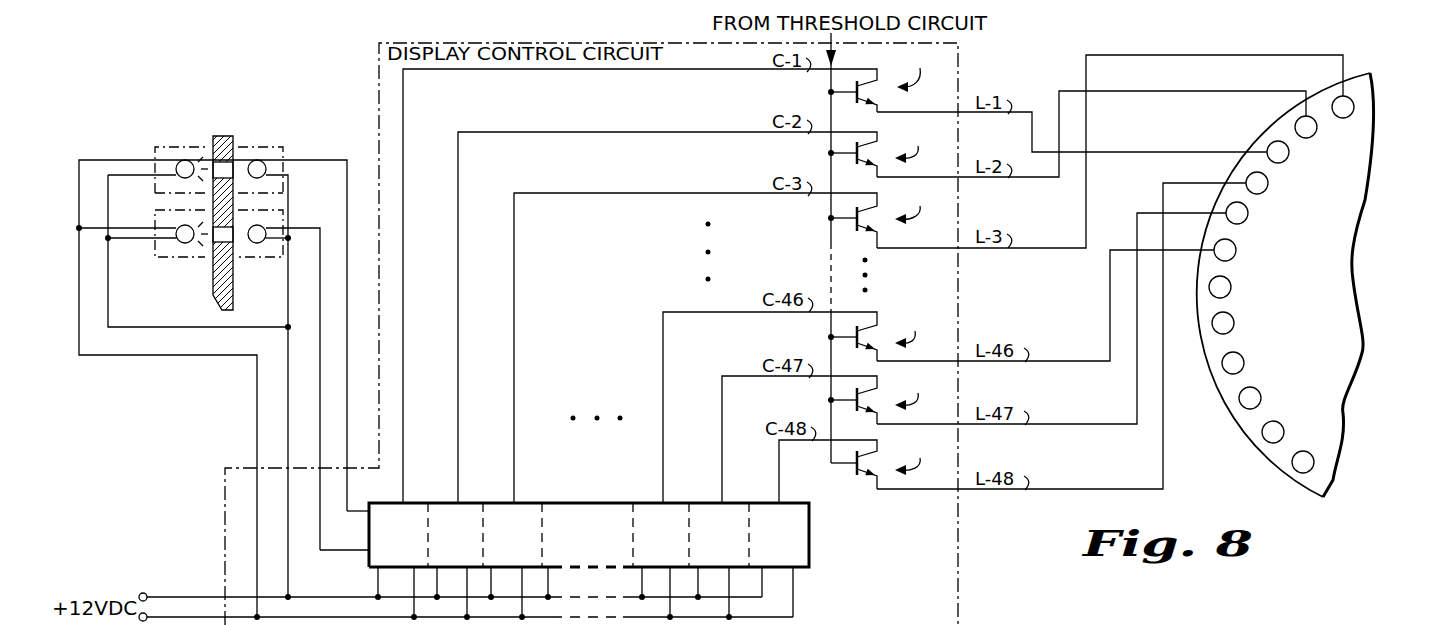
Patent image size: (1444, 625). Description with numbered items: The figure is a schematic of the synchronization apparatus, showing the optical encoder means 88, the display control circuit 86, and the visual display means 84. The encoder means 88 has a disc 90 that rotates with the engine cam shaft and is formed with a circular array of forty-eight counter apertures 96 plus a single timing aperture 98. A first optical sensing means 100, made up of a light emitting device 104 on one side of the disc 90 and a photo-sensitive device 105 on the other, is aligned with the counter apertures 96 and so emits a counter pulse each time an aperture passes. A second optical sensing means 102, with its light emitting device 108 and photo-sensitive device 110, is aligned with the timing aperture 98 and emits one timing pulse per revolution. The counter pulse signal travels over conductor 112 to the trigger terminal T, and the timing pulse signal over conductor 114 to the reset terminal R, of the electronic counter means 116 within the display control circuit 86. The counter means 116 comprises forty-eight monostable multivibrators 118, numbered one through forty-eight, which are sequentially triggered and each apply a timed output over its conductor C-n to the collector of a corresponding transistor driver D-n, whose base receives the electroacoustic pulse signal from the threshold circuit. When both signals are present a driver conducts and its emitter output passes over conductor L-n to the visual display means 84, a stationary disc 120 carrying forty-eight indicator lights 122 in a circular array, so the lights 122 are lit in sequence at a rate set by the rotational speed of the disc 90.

The visual display means 84 is at (1350, 198).
The display control circuit 86 is at (975, 83).
The optical encoder means 88 is at (309, 133).
The disc 90 is at (235, 136).
The counter apertures 96 is at (236, 170).
The timing aperture 98 is at (234, 235).
The first optical sensing means 100 is at (198, 134).
The second optical sensing means 102 is at (165, 263).
The light emitting device 104 is at (182, 160).
The photo-sensitive device 105 is at (263, 161).
The light emitting device 108 is at (182, 227).
The photo-sensitive device 110 is at (259, 226).
The conductor 112 is at (320, 549).
The conductor 114 is at (347, 510).
The electronic counter means 116 is at (587, 488).
The monostable multivibrators 118 is at (440, 503).
The stationary disc 120 is at (1352, 218).
The indicator lights 122 is at (1342, 112).